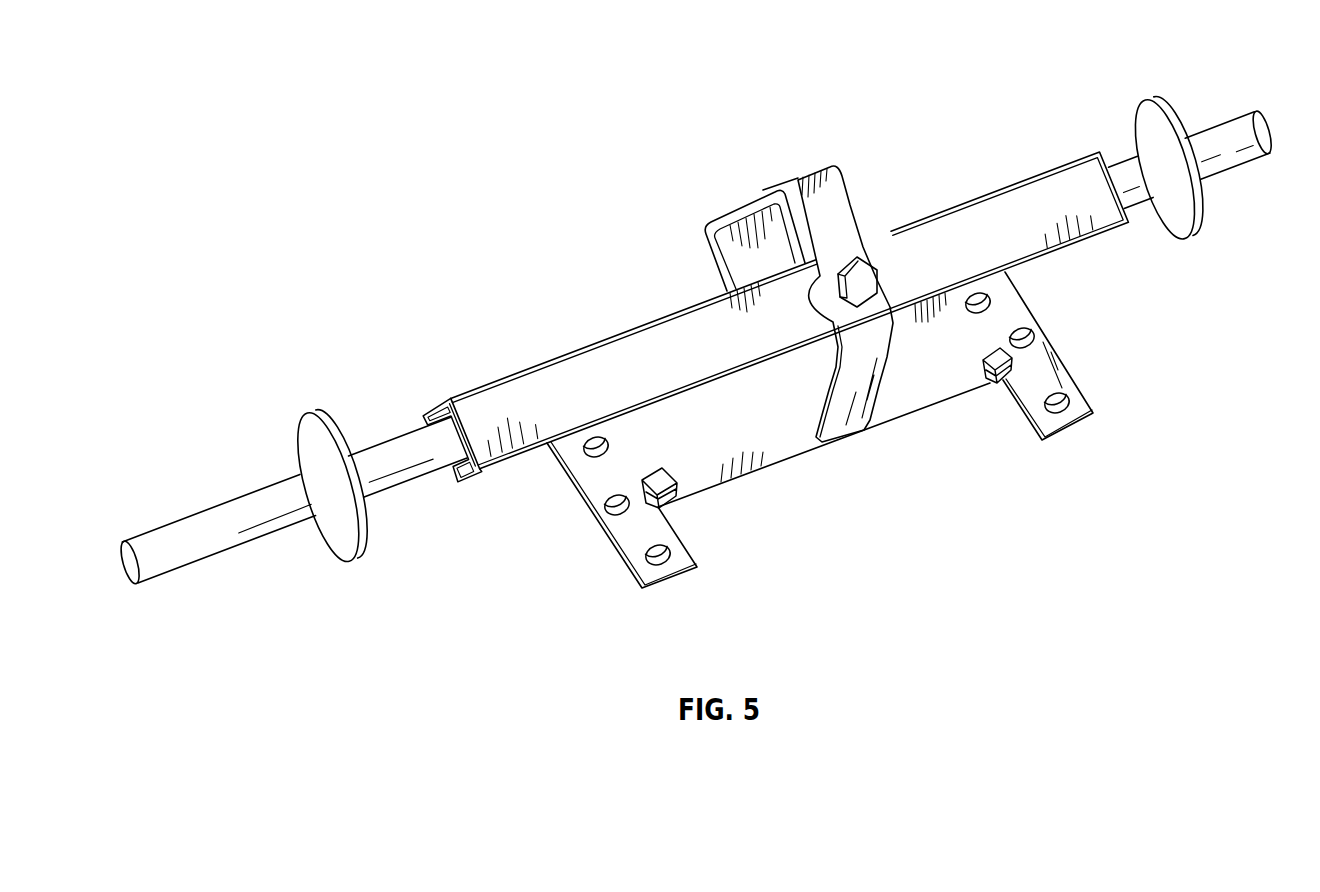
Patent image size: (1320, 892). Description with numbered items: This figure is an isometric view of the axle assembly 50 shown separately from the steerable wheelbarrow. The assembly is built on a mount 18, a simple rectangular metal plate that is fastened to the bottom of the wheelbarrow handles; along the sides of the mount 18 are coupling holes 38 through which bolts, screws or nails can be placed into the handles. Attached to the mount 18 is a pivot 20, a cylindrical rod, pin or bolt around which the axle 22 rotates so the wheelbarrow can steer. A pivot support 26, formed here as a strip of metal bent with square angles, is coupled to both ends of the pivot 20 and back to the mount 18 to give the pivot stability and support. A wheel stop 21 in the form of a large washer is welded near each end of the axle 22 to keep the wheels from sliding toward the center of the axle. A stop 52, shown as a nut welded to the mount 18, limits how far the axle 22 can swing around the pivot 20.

The mount 18 is at (643, 572).
The pivot 20 is at (860, 278).
The wheel stop 21 is at (312, 445).
The axle 22 is at (492, 470).
The pivot support 26 is at (737, 215).
The coupling holes 38 is at (597, 436).
The axle assembly 50 is at (696, 366).
The stop 52 is at (674, 491).